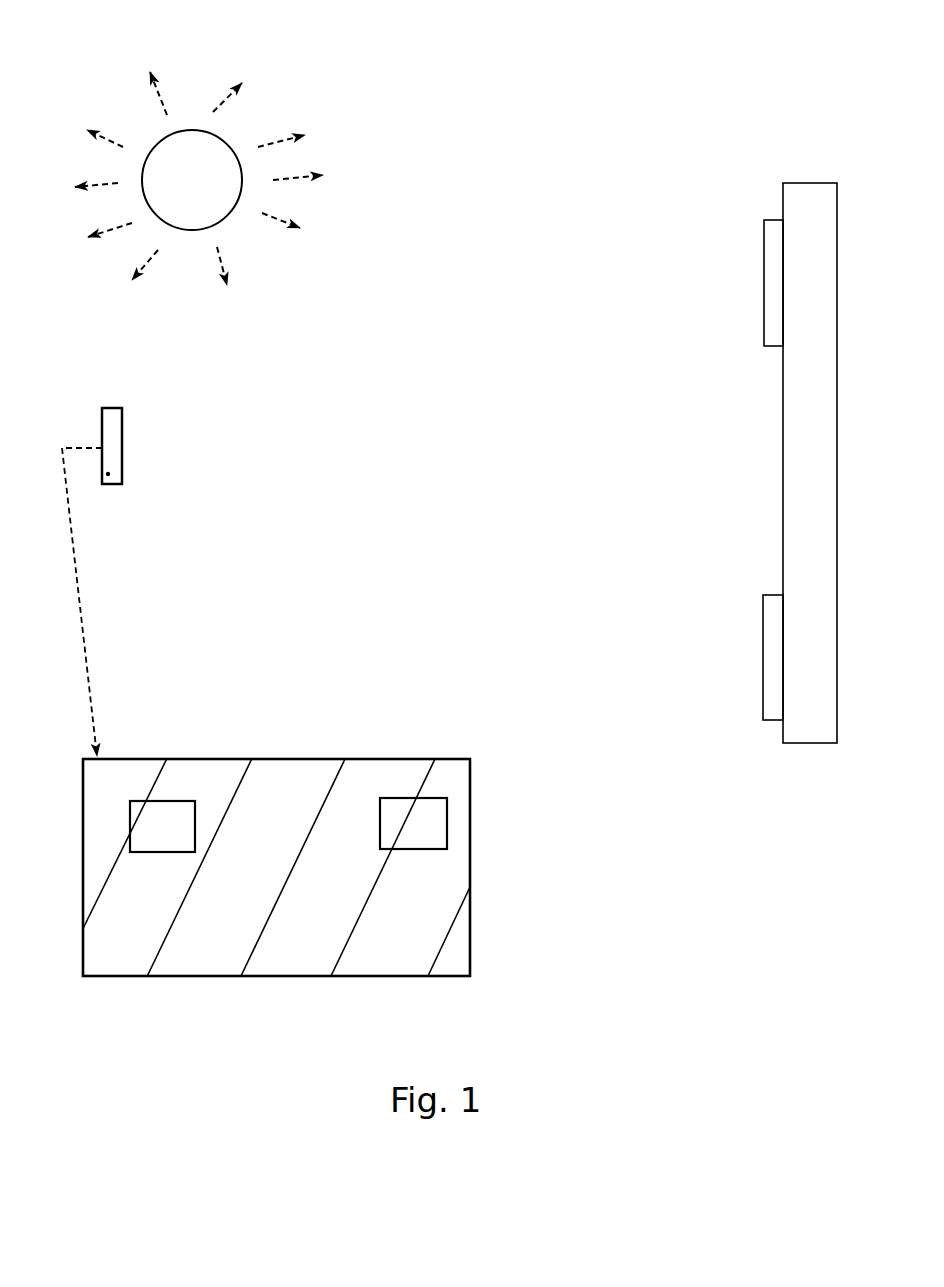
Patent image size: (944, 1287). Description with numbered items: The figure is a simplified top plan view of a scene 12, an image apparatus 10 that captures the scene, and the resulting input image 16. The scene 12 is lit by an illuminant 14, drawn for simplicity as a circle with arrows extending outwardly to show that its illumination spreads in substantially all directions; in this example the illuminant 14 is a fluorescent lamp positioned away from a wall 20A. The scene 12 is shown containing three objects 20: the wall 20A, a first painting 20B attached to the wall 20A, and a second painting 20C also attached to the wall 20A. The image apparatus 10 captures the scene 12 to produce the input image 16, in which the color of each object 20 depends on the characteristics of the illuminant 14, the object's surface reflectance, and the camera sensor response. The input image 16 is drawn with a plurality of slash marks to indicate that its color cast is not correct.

The image apparatus 10 is at (128, 440).
The scene 12 is at (518, 531).
The illuminant 14 is at (207, 158).
The input image 16 is at (458, 862).
The objects 20 is at (740, 415).
The wall 20A is at (805, 423).
The first painting 20B is at (773, 273).
The second painting 20C is at (775, 657).